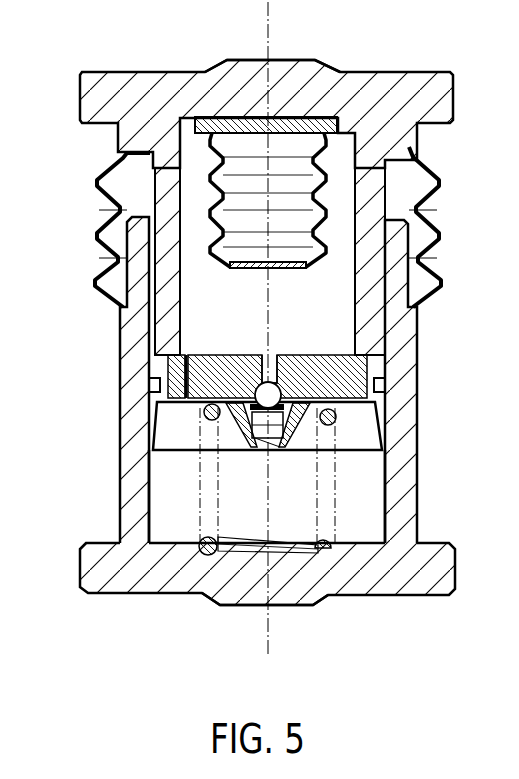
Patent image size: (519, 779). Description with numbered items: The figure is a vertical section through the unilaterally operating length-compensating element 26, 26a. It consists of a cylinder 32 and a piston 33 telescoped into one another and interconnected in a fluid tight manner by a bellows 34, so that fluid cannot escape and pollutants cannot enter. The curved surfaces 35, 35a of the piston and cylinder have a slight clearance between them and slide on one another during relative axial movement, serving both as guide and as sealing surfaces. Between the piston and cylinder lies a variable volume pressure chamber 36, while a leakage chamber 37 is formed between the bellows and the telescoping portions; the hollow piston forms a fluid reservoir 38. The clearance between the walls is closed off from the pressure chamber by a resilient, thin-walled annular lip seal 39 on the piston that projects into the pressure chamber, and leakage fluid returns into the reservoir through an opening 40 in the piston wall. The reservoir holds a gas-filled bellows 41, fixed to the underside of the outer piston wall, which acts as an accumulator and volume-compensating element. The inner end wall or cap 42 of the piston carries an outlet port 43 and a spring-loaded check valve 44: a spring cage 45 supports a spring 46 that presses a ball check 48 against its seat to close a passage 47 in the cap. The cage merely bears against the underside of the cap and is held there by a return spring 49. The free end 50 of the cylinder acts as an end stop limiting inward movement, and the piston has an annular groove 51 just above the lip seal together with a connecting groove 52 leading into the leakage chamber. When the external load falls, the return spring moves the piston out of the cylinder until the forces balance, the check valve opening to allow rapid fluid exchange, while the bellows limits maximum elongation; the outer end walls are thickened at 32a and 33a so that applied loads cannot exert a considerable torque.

The length-compensating element 26 is at (396, 56).
The length-compensating element 26a is at (396, 56).
The cylinder 32 is at (103, 567).
The thickened outer end wall of cylinder 32a is at (208, 600).
The piston 33 is at (113, 97).
The thickened outer end wall of piston 33a is at (300, 58).
The bellows 34 is at (118, 166).
The curved surface of piston 35 is at (385, 325).
The curved surface of cylinder 35a is at (160, 500).
The pressure chamber 36 is at (308, 528).
The leakage chamber 37 is at (412, 195).
The fluid reservoir 38 is at (347, 140).
The annular lip seal 39 is at (153, 435).
The opening 40 is at (377, 173).
The gas-filled bellows 41 is at (318, 222).
The cap 42 is at (357, 365).
The outlet port 43 is at (167, 362).
The check valve 44 is at (265, 355).
The spring cage 45 is at (305, 453).
The spring 46 is at (268, 447).
The passage 47 is at (280, 378).
The ball check 48 is at (252, 385).
The return spring 49 is at (222, 536).
The free end of cylinder 50 is at (100, 215).
The annular groove 51 is at (153, 384).
The connecting groove 52 is at (157, 325).